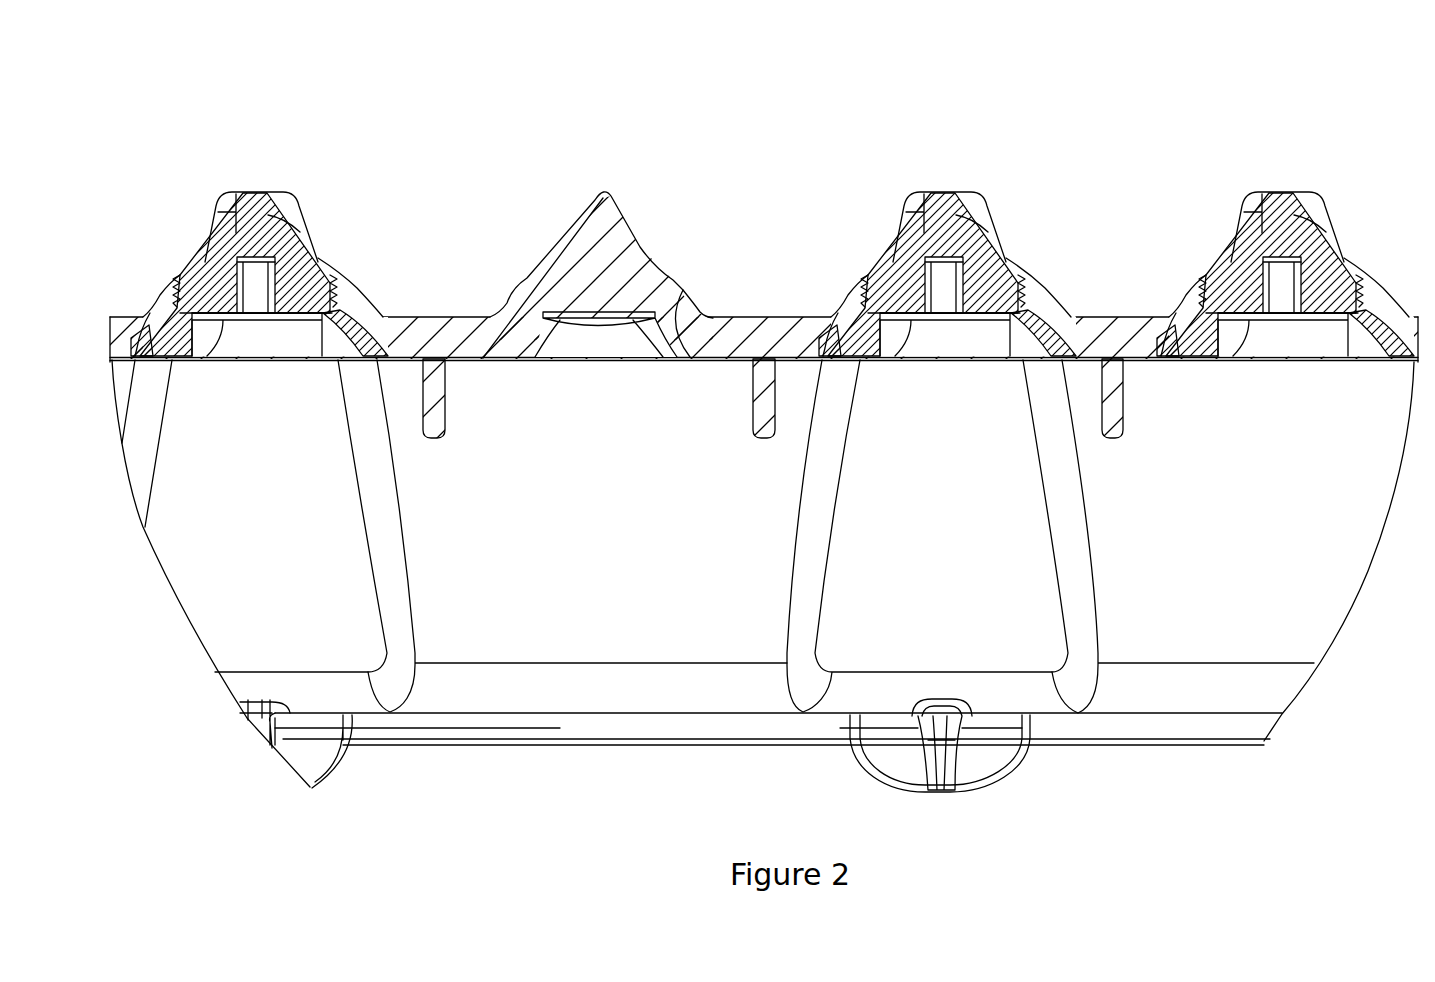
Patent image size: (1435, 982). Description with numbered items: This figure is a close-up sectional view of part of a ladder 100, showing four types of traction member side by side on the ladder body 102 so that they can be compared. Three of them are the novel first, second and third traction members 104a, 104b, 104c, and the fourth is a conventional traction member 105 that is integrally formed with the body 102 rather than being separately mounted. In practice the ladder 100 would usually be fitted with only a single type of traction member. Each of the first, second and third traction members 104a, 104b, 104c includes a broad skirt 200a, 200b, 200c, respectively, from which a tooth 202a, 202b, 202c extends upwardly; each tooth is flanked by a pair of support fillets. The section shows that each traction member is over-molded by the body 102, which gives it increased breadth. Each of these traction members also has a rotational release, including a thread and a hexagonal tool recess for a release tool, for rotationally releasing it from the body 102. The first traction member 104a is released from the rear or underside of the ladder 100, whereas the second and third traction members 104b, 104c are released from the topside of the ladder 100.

The ladder 100 is at (769, 424).
The body 102 is at (282, 216).
The first traction member 104a is at (286, 271).
The second traction member 104b is at (938, 243).
The third traction member 104c is at (1265, 242).
The conventional traction member 105 is at (602, 223).
The broad skirt 200a is at (322, 358).
The broad skirt 200b is at (888, 276).
The broad skirt 200c is at (1196, 283).
The tooth 202a is at (252, 192).
The tooth 202b is at (940, 192).
The tooth 202c is at (1282, 192).